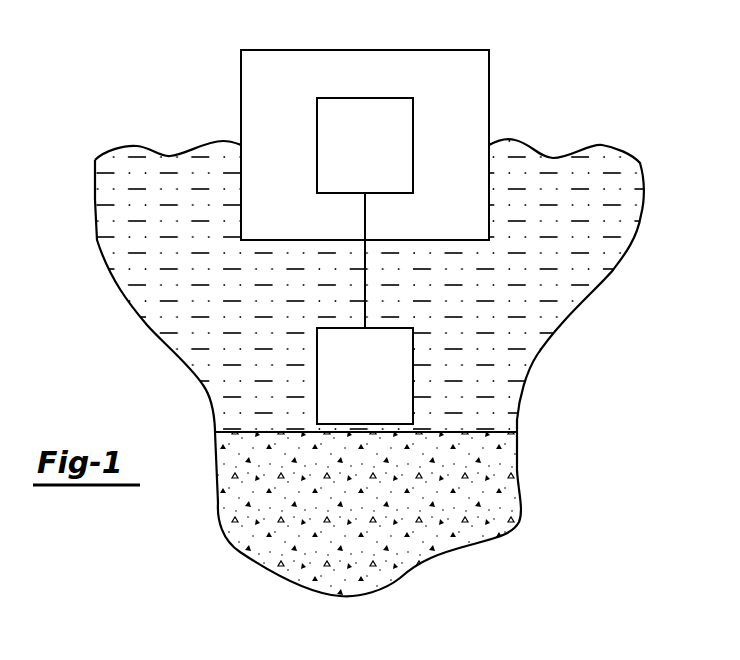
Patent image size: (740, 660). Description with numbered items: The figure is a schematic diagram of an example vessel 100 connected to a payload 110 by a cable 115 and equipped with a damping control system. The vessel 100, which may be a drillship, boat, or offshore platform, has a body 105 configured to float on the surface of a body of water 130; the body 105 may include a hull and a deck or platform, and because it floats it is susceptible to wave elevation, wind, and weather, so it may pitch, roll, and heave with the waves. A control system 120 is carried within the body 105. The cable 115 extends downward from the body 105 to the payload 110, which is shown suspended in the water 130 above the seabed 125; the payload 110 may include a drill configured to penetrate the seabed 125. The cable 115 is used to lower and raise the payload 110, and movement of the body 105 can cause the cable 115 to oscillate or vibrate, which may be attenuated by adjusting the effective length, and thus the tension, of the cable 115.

The vessel 100 is at (547, 64).
The body 105 is at (489, 87).
The payload 110 is at (377, 390).
The cable 115 is at (365, 276).
The control system 120 is at (377, 158).
The seabed 125 is at (488, 432).
The body of water 130 is at (168, 148).